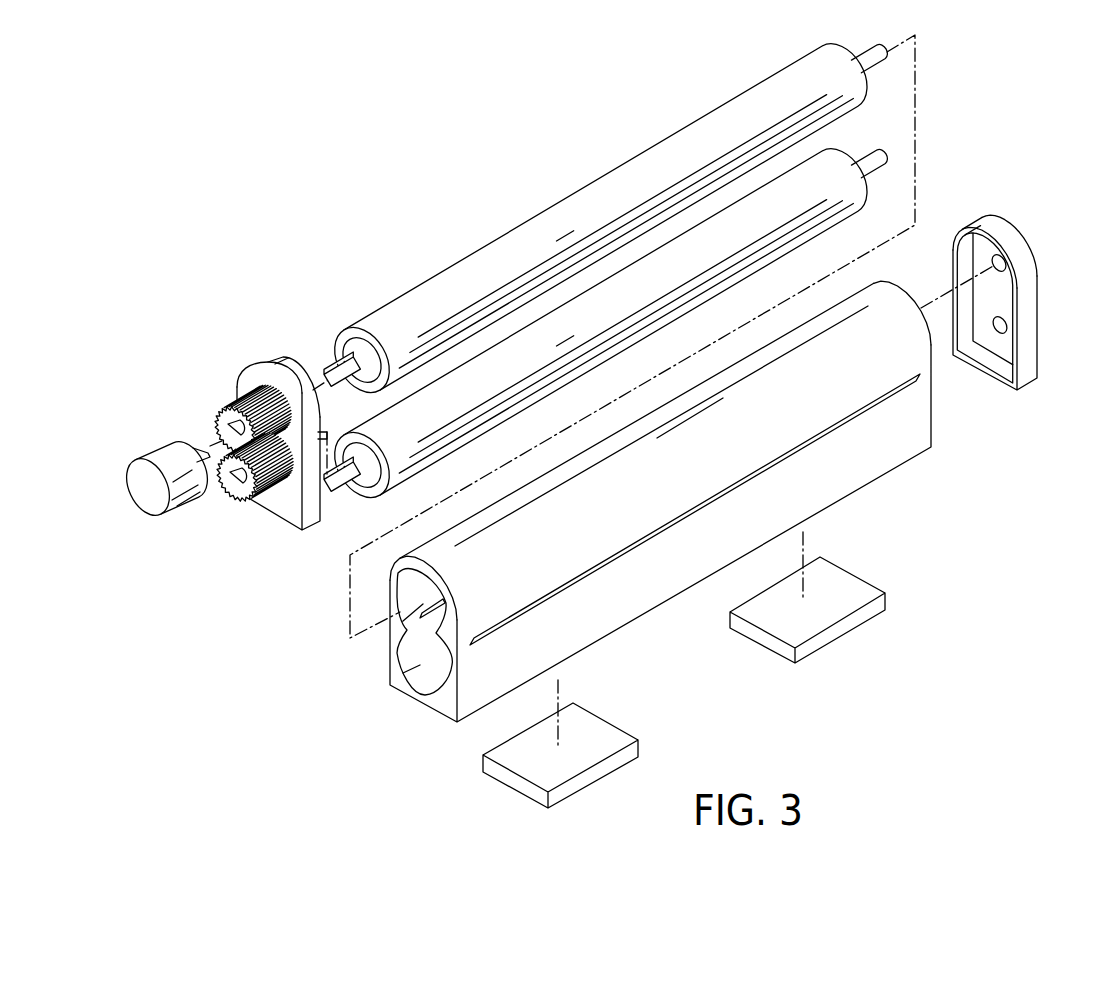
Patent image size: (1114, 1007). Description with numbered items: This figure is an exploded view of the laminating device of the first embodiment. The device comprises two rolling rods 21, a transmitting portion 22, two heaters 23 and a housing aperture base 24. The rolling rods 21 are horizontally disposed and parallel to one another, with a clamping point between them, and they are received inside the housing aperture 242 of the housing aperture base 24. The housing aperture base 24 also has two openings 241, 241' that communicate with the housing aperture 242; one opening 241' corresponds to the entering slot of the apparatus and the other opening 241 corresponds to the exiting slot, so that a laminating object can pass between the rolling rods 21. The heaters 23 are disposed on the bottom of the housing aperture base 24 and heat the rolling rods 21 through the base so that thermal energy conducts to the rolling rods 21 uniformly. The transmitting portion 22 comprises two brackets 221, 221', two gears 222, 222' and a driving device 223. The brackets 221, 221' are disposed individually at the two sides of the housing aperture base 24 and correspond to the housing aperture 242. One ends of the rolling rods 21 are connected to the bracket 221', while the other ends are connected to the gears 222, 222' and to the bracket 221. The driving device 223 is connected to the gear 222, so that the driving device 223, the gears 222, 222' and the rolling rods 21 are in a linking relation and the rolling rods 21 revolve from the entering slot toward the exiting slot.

The rolling rods 21 is at (843, 160).
The transmitting portion 22 is at (182, 462).
The bracket 221 is at (209, 438).
The bracket 221' is at (1033, 295).
The gear 222 is at (189, 419).
The gear 222' is at (191, 497).
The driving device 223 is at (145, 476).
The heater 23 is at (598, 734).
The housing aperture base 24 is at (591, 516).
The opening 241 is at (376, 654).
The opening 241' is at (372, 635).
The housing aperture 242 is at (418, 668).